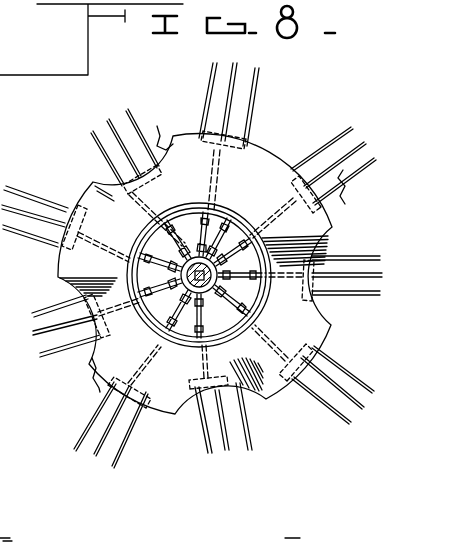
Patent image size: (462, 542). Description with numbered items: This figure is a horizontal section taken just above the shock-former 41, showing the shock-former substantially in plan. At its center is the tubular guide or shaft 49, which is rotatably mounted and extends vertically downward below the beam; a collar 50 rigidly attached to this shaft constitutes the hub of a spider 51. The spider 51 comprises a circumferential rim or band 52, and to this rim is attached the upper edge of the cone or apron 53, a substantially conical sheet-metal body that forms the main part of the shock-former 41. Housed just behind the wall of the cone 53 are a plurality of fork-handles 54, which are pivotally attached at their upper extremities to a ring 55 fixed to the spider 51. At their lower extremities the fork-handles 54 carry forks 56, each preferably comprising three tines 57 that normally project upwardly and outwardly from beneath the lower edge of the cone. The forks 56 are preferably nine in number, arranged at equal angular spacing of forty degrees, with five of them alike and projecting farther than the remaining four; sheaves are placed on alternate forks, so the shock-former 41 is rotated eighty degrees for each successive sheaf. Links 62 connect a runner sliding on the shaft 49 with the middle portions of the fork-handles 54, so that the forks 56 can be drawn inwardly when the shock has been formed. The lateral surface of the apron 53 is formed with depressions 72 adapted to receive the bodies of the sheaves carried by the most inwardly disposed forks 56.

The shock-former 41 is at (278, 398).
The tubular guide or shaft 49 is at (176, 411).
The collar 50 is at (150, 232).
The spider 51 is at (214, 242).
The circumferential rim or band 52 is at (256, 202).
The cone or apron 53 is at (97, 377).
The fork-handles 54 is at (268, 236).
The ring 55 is at (240, 335).
The forks 56 is at (160, 432).
The tines 57 is at (40, 198).
The links 62 is at (186, 240).
The depressions 72 is at (268, 428).